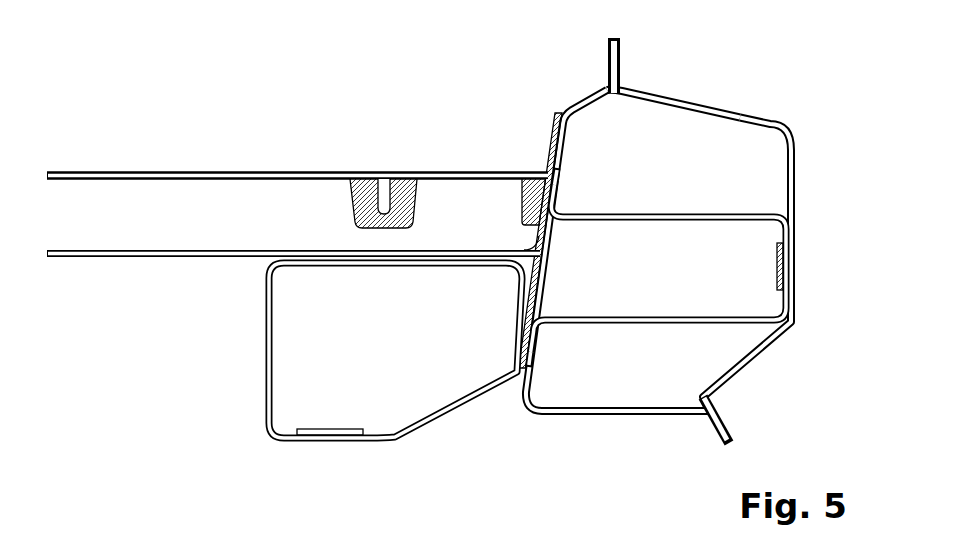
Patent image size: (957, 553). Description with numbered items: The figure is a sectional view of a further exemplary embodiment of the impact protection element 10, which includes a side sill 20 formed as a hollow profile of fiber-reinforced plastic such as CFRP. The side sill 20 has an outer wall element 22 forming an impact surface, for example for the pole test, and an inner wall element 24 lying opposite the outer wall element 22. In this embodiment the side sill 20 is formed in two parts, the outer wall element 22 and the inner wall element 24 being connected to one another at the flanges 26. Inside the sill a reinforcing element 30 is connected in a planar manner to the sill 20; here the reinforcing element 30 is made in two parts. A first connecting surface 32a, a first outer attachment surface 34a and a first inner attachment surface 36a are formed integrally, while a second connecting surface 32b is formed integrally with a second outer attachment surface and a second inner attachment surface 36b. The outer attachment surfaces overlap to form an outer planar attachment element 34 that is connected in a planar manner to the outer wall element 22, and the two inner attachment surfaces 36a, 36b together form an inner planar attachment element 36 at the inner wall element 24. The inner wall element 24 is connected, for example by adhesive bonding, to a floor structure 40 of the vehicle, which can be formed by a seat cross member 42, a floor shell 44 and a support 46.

The impact protection element 10 is at (428, 79).
The side sill 20 is at (712, 104).
The outer wall element 22 is at (800, 183).
The inner wall element 24 is at (592, 96).
The flanges 26 is at (624, 56).
The reinforcing element 30 is at (746, 196).
The first connecting surface 32a is at (693, 212).
The second connecting surface 32b is at (652, 325).
The outer planar attachment element 34 is at (806, 288).
The first outer attachment surface 34a is at (790, 258).
The inner planar attachment element 36 is at (557, 234).
The first inner attachment surface 36a is at (565, 180).
The second inner attachment surface 36b is at (532, 353).
The floor structure 40 is at (153, 369).
The seat cross member 42 is at (150, 172).
The floor shell 44 is at (165, 258).
The support 46 is at (265, 376).